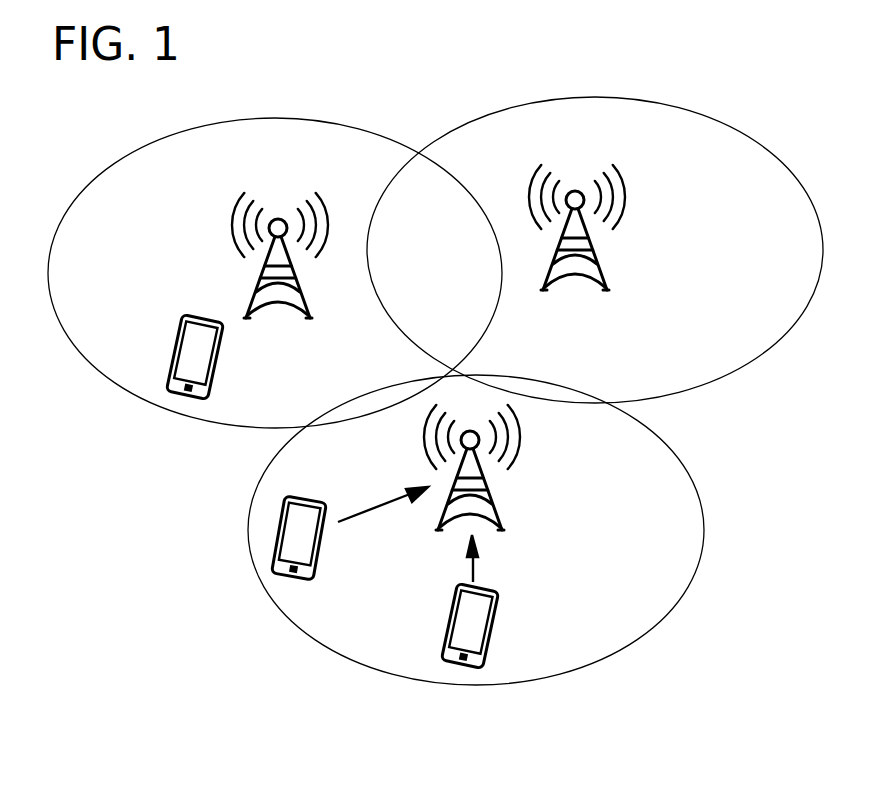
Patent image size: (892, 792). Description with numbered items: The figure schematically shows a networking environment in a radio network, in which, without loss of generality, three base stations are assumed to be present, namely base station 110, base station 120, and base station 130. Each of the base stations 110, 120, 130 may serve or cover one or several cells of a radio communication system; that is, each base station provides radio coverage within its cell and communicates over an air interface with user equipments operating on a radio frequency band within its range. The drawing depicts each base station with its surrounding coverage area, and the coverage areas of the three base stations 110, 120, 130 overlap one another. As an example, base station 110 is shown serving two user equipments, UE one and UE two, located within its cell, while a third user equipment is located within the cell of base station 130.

The base station 110 is at (705, 532).
The base station 120 is at (593, 97).
The base station 130 is at (275, 118).